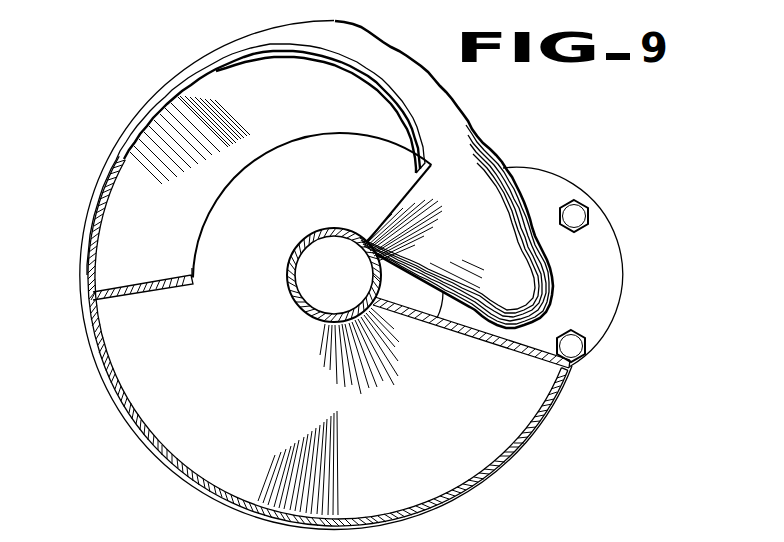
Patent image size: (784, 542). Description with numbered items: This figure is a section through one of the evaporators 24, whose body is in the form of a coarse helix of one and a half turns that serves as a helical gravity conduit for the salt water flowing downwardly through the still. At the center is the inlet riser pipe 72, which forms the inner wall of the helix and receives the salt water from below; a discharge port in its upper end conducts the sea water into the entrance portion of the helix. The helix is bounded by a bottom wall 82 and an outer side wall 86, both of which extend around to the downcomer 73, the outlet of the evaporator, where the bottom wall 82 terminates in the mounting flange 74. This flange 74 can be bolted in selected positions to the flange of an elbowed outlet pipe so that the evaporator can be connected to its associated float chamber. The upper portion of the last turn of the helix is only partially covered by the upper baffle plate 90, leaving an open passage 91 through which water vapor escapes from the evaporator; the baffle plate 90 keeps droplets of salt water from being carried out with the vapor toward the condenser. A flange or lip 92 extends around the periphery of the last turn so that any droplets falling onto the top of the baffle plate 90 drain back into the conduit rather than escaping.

The evaporator 24 is at (138, 445).
The inlet riser pipe 72 is at (289, 289).
The downcomer 73 is at (536, 285).
The mounting flange 74 is at (605, 318).
The bottom wall 82 is at (122, 378).
The outer side wall 86 is at (522, 453).
The upper baffle plate 90 is at (161, 252).
The open passage 91 is at (276, 147).
The flange or lip 92 is at (405, 115).